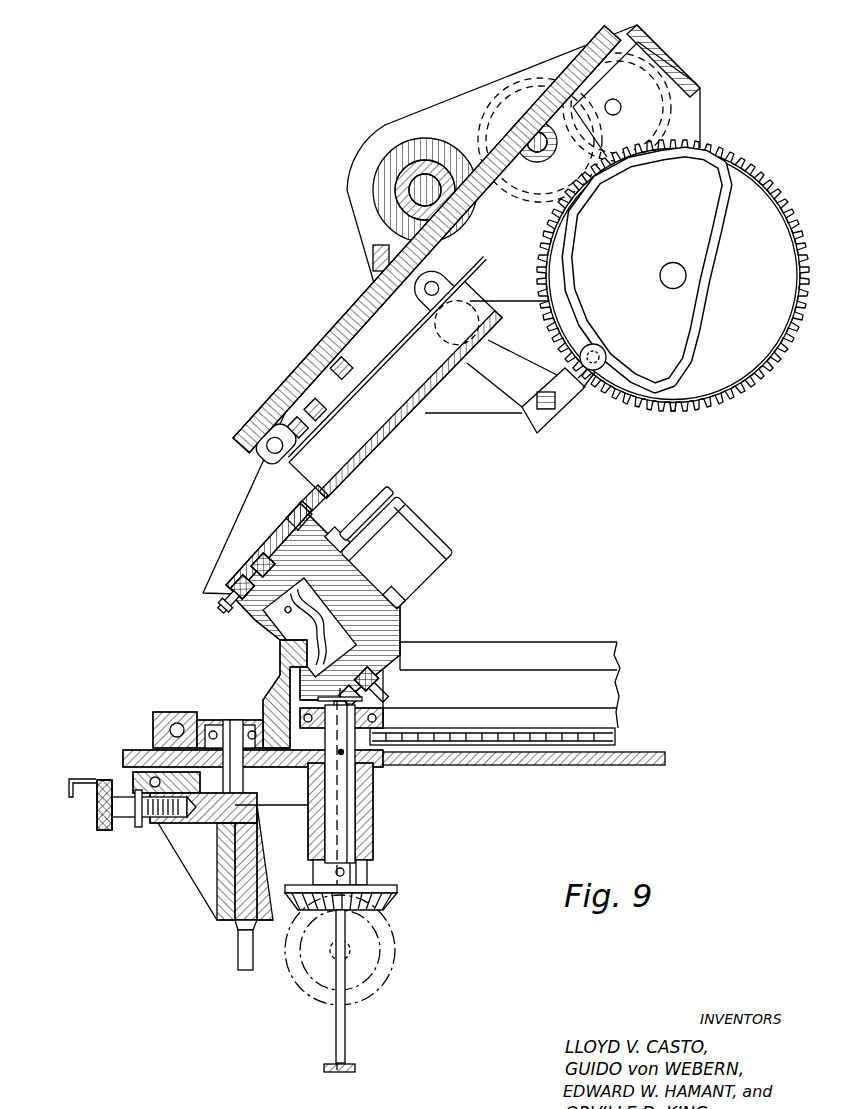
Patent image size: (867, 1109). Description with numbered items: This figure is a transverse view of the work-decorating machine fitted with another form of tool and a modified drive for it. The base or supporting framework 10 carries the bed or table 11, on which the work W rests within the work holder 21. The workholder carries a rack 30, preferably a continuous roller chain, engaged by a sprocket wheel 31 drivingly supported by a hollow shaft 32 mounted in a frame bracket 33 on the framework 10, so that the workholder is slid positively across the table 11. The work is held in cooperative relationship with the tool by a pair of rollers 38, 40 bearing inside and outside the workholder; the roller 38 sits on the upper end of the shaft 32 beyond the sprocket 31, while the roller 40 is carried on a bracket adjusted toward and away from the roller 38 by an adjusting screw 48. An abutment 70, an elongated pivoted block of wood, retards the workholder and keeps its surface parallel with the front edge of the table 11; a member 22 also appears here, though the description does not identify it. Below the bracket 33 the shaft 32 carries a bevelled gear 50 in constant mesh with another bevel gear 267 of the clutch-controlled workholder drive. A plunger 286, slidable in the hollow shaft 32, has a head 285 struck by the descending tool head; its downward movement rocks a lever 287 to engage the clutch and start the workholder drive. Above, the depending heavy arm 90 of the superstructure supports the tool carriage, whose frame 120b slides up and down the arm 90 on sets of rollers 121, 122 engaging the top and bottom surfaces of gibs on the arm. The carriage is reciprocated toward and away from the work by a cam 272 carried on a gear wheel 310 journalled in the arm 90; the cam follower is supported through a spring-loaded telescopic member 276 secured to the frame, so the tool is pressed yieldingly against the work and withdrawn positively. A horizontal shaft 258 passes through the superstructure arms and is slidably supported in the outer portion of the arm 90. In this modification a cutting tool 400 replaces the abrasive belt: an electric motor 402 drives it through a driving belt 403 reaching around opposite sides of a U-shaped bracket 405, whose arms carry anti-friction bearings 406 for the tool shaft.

The horizontal shaft 258 is at (425, 192).
The depending arm 90 is at (330, 335).
The frame of the tool carriage 120b is at (404, 423).
The rollers 121 is at (437, 274).
The rollers 122 is at (454, 329).
The cam 272 is at (673, 275).
The telescopic member 276 is at (560, 403).
The gear wheel 310 is at (679, 410).
The driving belt 403 is at (368, 500).
The electric motor 402 is at (428, 545).
The U-shaped bracket 405 is at (392, 630).
The anti-friction bearings 406 is at (222, 600).
The cutting tool 400 is at (268, 632).
The head of plunger 285 is at (364, 700).
The roller 38 is at (384, 719).
The post 22 is at (281, 689).
The roller 40 is at (253, 718).
The abutment 70 is at (173, 716).
The work W is at (545, 650).
The work holder 21 is at (614, 698).
The rack 30 is at (608, 739).
The table 11 is at (624, 765).
The sprocket wheel 31 is at (377, 765).
The shaft 32 is at (349, 819).
The frame bracket 33 is at (375, 843).
The adjusting screw 48 is at (105, 832).
The base or supporting framework 10 is at (238, 951).
The bevelled gear 50 is at (390, 892).
The bevel gear 267 is at (394, 948).
The plunger 286 is at (346, 1036).
The lever 287 is at (356, 1068).